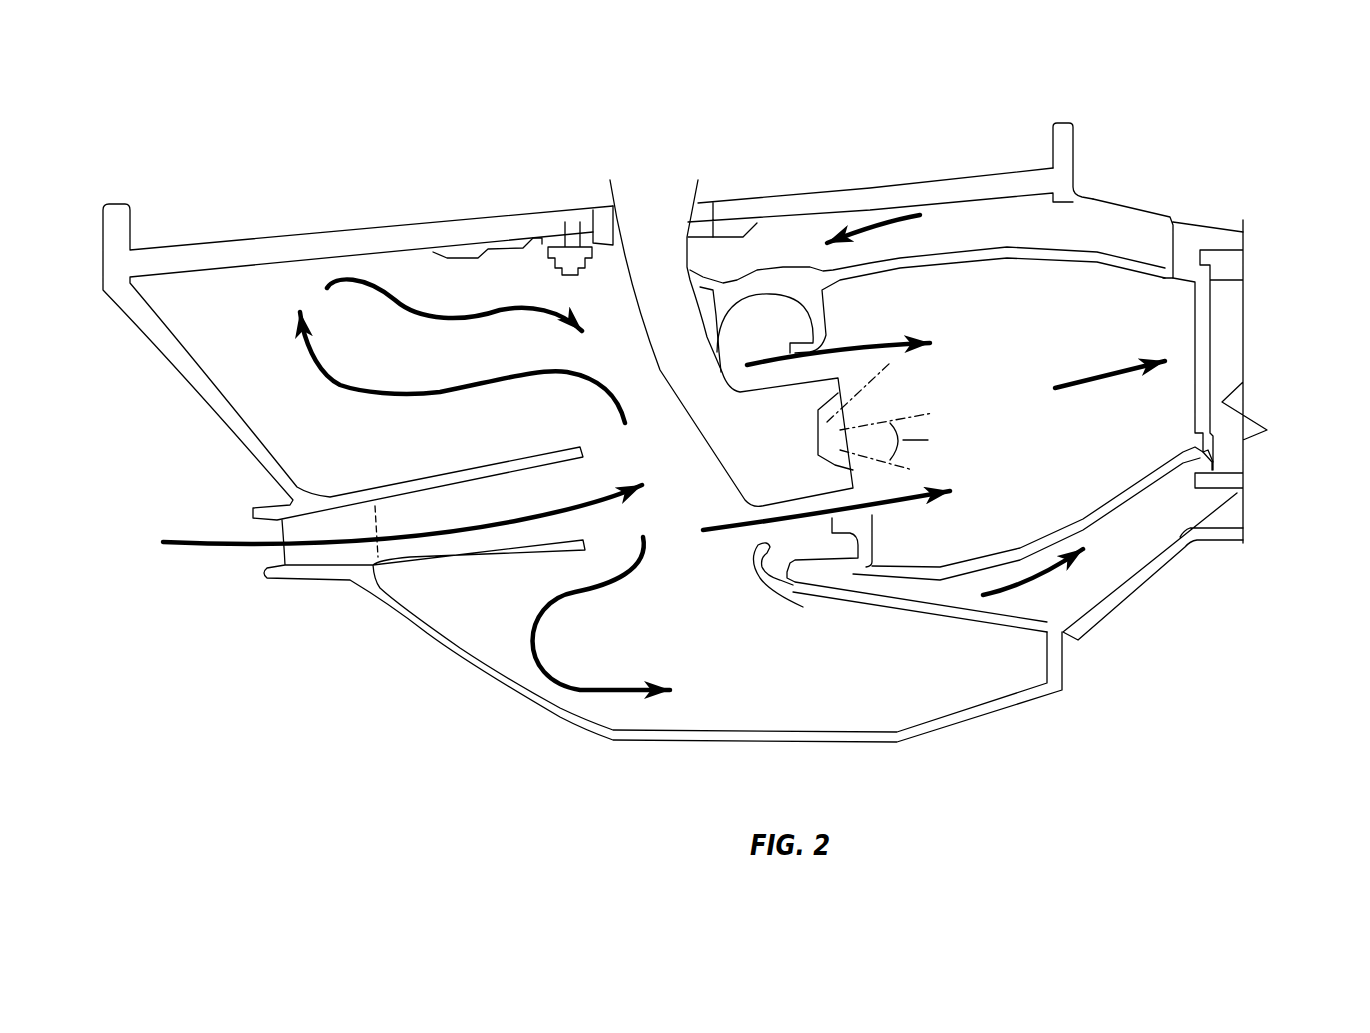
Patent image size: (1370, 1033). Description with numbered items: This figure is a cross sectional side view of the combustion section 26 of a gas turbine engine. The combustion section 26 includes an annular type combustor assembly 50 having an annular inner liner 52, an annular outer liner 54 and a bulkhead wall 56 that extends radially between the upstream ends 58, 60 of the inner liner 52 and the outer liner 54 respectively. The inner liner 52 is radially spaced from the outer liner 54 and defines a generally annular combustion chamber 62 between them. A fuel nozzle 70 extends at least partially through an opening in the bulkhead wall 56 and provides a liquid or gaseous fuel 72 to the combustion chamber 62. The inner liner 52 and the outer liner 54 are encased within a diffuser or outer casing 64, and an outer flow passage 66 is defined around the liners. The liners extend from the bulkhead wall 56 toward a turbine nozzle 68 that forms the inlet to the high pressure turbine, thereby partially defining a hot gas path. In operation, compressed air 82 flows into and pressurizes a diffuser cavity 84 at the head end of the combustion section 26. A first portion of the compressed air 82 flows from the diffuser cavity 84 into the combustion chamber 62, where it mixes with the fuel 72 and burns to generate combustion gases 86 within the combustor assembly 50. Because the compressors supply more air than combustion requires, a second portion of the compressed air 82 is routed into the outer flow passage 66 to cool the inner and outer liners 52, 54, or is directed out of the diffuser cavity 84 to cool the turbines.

The combustion section 26 is at (865, 98).
The combustor assembly 50 is at (941, 234).
The annular inner liner 52 is at (1037, 535).
The annular outer liner 54 is at (893, 268).
The bulkhead wall 56 is at (747, 576).
The upstream end of the inner liner 58 is at (833, 593).
The upstream end of the outer liner 60 is at (772, 256).
The combustion chamber 62 is at (1019, 394).
The outer casing 64 is at (1020, 156).
The outer flow passage 66 is at (1087, 226).
The turbine nozzle 68 is at (1224, 334).
The fuel nozzle 70 is at (785, 451).
The fuel 72 is at (886, 416).
The compressed air 82 is at (420, 530).
The diffuser cavity 84 is at (460, 290).
The combustion gases 86 is at (1110, 372).